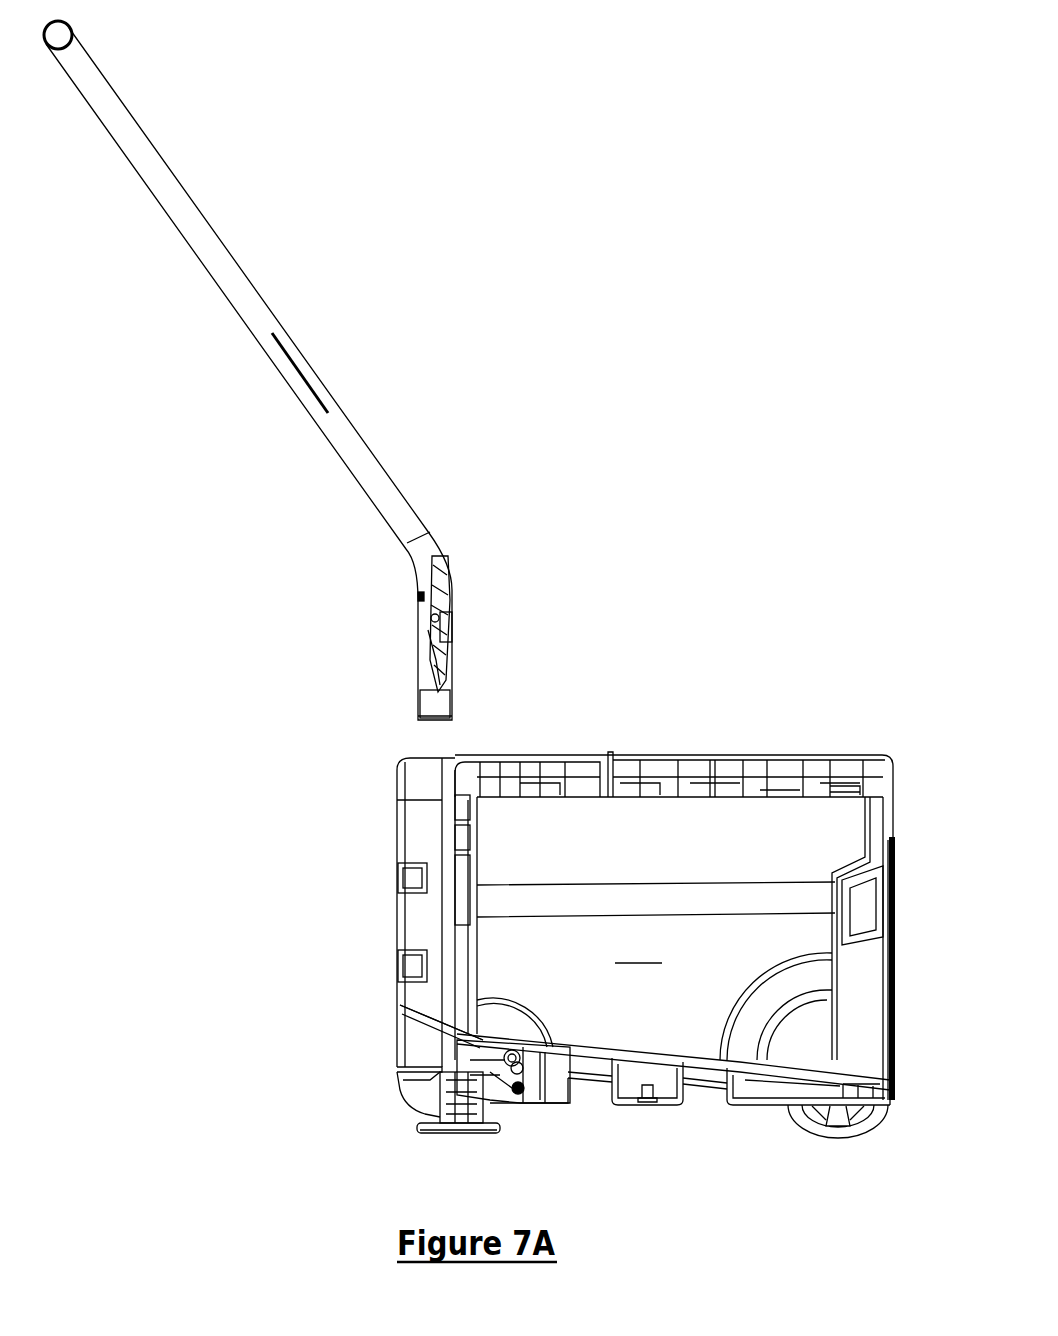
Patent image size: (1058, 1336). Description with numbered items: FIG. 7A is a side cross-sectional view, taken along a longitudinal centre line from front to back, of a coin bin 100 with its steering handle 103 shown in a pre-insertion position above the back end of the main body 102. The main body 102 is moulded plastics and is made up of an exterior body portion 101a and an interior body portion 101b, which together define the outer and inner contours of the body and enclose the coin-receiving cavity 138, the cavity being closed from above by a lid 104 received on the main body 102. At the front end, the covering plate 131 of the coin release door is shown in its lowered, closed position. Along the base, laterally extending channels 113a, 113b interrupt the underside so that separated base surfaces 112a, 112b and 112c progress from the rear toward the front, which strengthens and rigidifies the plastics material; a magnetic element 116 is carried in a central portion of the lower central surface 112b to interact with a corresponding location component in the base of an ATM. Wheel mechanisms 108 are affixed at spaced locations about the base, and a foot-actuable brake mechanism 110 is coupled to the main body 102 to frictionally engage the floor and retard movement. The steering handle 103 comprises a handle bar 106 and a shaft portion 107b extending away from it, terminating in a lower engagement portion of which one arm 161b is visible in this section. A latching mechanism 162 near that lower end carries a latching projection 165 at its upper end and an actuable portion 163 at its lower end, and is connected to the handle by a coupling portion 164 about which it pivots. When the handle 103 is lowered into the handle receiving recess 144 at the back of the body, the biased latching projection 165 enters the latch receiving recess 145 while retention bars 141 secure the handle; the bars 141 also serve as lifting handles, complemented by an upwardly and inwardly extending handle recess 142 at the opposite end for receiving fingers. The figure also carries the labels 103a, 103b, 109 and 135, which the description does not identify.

The coin bin 100 is at (702, 292).
The exterior body portion 101a is at (887, 1107).
The interior body portion 101b is at (645, 927).
The main body 102 is at (400, 1030).
The steering handle 103 is at (252, 182).
The rear wheel well 103a is at (802, 1027).
The front wheel well 103b is at (498, 1012).
The lid 104 is at (733, 758).
The handle bar 106 is at (70, 24).
The shaft portion 107b is at (240, 276).
The wheel mechanism 108 is at (821, 1147).
The handle slot 109 is at (300, 362).
The brake mechanism 110 is at (387, 1139).
The base surface 112a is at (540, 1110).
The lower central surface 112b is at (622, 1105).
The base surface 112c is at (770, 1107).
The laterally extending channel 113a is at (591, 1100).
The laterally extending channel 113b is at (703, 1107).
The magnetic element 116 is at (647, 1108).
The covering plate 131 is at (897, 1020).
The rail end portion 135 is at (850, 800).
The coin-receiving cavity 138 is at (686, 822).
The retention bars 141 is at (395, 878).
The handle recess 142 is at (878, 910).
The handle receiving recess 144 is at (438, 903).
The latch receiving recess 145 is at (450, 840).
The arm of handle lower end 161b is at (425, 682).
The latching mechanism 162 is at (405, 609).
The actuable portion 163 is at (432, 663).
The coupling portion 164 is at (437, 620).
The latching projection 165 is at (437, 562).